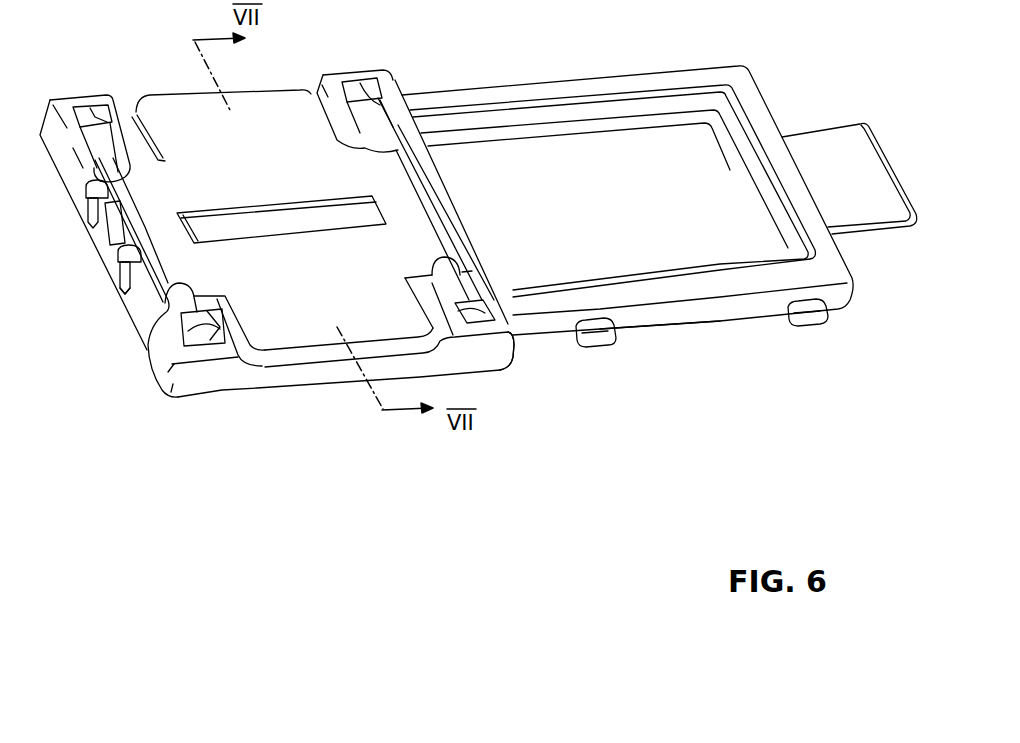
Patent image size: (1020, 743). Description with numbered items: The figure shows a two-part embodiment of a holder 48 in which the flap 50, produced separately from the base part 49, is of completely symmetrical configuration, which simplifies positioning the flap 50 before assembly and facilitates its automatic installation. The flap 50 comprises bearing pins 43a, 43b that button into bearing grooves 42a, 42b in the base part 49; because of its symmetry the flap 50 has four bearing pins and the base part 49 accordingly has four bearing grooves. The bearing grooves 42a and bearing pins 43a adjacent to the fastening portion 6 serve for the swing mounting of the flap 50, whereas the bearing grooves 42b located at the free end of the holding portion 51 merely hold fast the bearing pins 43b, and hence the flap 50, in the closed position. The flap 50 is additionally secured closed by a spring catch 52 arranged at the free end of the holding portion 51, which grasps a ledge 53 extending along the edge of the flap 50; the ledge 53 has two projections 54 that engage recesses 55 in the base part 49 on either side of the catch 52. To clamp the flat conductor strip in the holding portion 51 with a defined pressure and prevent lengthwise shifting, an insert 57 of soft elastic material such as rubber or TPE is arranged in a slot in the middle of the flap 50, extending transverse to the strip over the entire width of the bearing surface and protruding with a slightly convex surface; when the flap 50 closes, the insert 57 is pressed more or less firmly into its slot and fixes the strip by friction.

The fastening portion 6 is at (740, 306).
The holder 48 is at (663, 327).
The base part 49 is at (482, 350).
The flap 50 is at (178, 130).
The holding portion 51 is at (318, 378).
The spring catch 52 is at (115, 262).
The ledge 53 is at (122, 293).
The projections 54 is at (88, 203).
The recesses 55 is at (105, 232).
The insert 57 is at (347, 210).
The bearing grooves 42a is at (362, 92).
The bearing grooves 42b is at (92, 110).
The bearing pins 43a is at (377, 110).
The bearing pins 43b is at (150, 362).